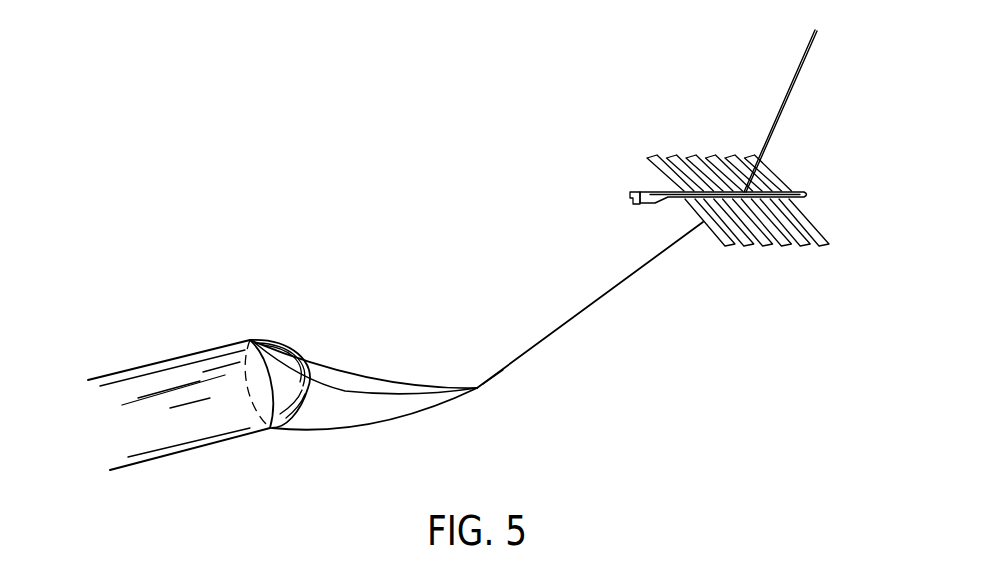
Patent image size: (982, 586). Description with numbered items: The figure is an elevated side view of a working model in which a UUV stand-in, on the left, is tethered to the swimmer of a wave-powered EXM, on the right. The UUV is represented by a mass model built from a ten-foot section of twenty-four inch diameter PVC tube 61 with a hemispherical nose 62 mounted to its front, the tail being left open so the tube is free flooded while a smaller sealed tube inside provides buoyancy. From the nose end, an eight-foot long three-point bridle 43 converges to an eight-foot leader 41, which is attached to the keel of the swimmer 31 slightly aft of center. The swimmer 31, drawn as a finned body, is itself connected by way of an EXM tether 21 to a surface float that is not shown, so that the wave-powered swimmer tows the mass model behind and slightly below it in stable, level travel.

The EXM tether 21 is at (790, 91).
The swimmer 31 is at (853, 141).
The leader 41 is at (597, 304).
The three-point bridle 43 is at (390, 420).
The PVC tube 61 is at (75, 345).
The hemispherical nose 62 is at (277, 338).